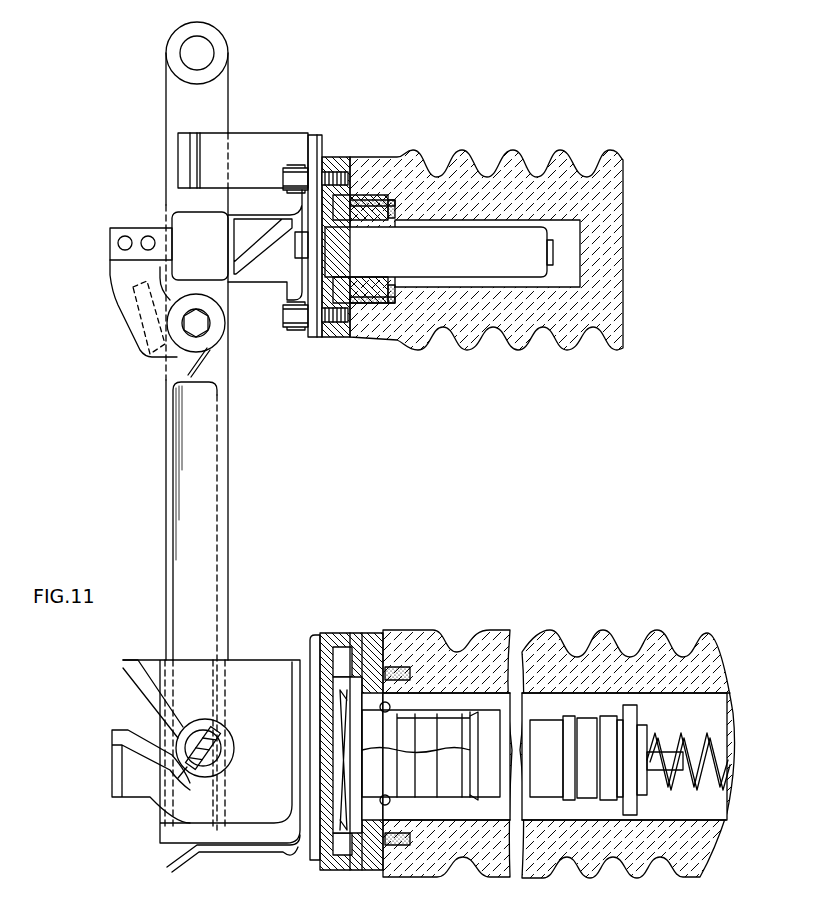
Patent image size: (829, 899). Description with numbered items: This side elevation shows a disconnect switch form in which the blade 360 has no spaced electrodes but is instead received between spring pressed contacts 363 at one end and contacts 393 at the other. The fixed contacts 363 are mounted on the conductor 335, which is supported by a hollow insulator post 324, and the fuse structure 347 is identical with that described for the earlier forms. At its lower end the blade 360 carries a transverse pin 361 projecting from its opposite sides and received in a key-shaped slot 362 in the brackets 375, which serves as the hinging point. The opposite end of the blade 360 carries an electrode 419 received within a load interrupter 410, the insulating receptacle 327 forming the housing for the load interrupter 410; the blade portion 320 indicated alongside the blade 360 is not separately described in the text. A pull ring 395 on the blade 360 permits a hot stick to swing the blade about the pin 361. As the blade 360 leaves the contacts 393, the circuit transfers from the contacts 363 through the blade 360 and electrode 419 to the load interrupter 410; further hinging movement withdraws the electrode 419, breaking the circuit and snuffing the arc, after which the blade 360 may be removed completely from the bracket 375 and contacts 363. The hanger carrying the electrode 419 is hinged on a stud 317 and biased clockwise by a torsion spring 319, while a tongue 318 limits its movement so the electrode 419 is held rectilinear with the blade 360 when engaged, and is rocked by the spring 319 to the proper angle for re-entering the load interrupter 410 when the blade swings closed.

The pull ring 395 is at (183, 54).
The spring pressed contacts 393 is at (245, 144).
The insulating receptacle 327 is at (517, 153).
The electrode 419 is at (113, 240).
The load interrupter 410 is at (378, 258).
The tongue 318 is at (132, 333).
The stud 317 is at (203, 326).
The torsion spring 319 is at (200, 367).
The blade 360 is at (165, 471).
The switch blade arm 320 is at (247, 482).
The conductor 335 is at (305, 660).
The fuse structure 347 is at (543, 723).
The hollow insulator post 324 is at (613, 640).
The bracket 375 is at (133, 671).
The key-shaped slot 362 is at (183, 733).
The transverse pin 361 is at (207, 753).
The spring pressed contacts 363 is at (158, 843).